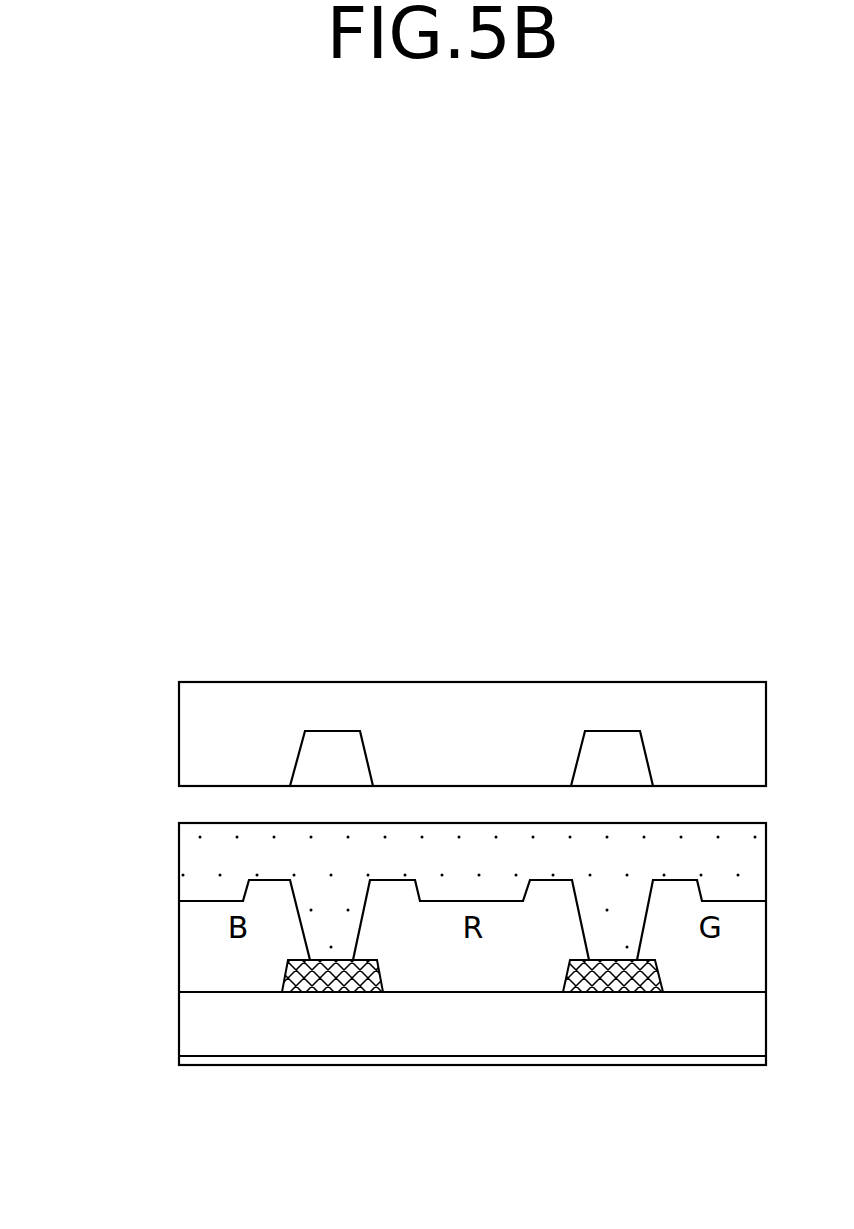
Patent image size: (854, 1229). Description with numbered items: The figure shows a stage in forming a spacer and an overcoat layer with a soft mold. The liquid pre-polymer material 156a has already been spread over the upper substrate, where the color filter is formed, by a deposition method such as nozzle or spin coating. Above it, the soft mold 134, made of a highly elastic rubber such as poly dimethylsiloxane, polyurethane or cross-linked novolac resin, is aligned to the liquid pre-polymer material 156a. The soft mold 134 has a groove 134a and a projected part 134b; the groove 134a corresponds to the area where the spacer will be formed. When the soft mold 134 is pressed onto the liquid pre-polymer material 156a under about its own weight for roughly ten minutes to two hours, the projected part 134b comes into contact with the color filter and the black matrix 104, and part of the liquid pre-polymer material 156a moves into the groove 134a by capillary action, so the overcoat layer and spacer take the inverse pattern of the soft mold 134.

The soft mold 134 is at (390, 597).
The groove 134a is at (340, 724).
The projected part 134b is at (252, 775).
The liquid pre-polymer material 156a is at (197, 857).
The black matrix 104 is at (608, 983).